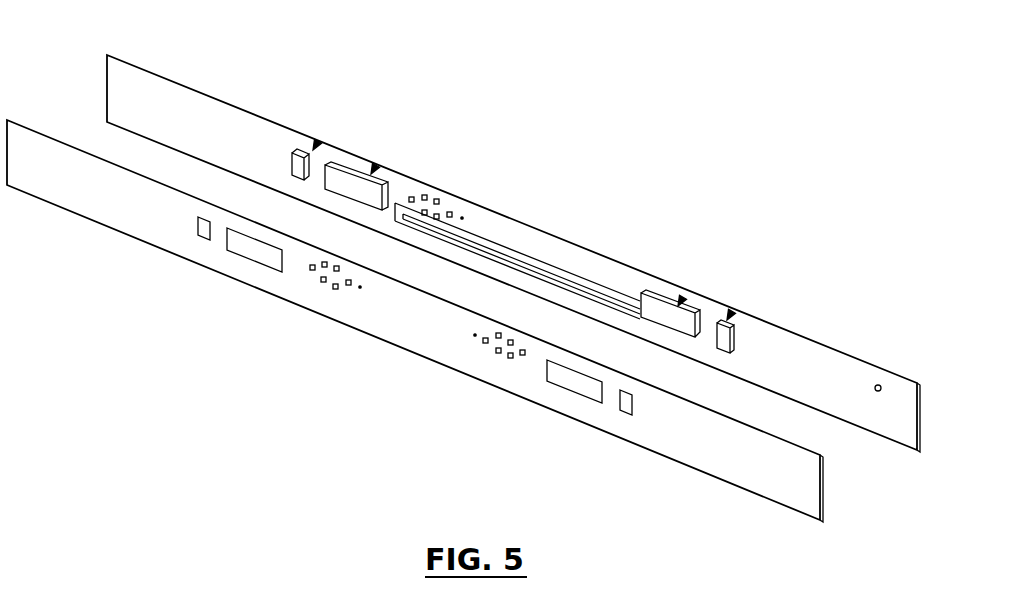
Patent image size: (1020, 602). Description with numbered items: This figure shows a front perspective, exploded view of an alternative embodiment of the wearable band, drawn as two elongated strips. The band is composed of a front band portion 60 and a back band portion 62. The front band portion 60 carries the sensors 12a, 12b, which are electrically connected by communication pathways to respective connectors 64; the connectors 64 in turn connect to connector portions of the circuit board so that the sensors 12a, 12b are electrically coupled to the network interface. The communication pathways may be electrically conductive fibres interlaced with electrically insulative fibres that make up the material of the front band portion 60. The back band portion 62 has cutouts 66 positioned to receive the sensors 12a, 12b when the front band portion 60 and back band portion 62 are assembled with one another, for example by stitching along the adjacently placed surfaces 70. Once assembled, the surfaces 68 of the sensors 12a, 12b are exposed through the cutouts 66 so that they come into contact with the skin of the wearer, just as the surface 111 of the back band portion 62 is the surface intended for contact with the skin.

The sensor 12a is at (376, 165).
The sensor 12b is at (318, 141).
The front band portion 60 is at (810, 338).
The back band portion 62 is at (790, 492).
The connector 64 is at (438, 197).
The cutout 66 is at (210, 236).
The sensor surface 68 is at (296, 152).
The adjacently placed surface 70 is at (878, 384).
The skin-contact surface 111 is at (717, 447).